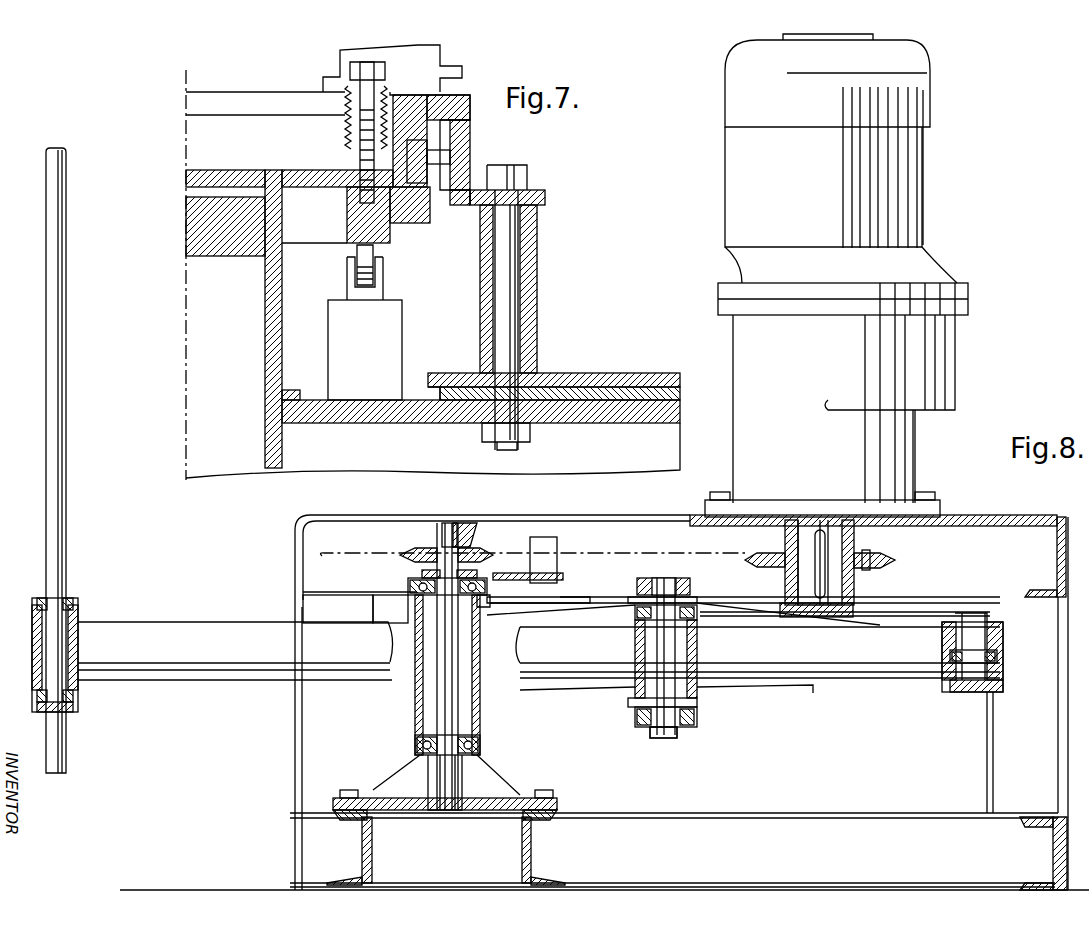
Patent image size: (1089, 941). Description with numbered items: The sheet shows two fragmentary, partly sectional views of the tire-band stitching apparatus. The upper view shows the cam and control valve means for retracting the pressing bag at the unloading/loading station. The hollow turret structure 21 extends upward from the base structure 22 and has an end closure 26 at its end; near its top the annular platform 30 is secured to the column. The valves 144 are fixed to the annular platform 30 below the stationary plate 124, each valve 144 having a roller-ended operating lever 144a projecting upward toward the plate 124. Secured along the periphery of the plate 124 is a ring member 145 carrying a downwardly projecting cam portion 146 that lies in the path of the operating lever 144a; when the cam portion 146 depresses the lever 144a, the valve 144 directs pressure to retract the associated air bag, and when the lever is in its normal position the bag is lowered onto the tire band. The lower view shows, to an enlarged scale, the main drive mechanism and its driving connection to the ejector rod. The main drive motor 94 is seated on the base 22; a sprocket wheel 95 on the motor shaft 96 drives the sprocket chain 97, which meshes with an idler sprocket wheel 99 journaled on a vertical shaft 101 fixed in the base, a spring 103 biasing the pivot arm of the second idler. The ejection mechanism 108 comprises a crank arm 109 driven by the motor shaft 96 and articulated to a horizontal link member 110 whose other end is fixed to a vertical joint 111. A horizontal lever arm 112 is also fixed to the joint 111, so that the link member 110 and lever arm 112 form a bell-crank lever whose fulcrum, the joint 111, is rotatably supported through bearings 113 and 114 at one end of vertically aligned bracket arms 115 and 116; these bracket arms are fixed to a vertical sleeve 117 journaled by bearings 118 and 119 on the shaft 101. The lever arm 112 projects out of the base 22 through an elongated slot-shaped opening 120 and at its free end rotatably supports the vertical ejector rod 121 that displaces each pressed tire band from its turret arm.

In FIG. 7, the vertical column or turret structure 21 is at (282, 362).
In FIG. 8, the base structure 22 is at (358, 520).
In FIG. 7, the end closure 26 is at (218, 257).
In FIG. 7, the annular platform 30 is at (305, 422).
In FIG. 8, the main drive motor 94 is at (915, 185).
In FIG. 8, the sprocket wheel 95 is at (888, 566).
In FIG. 8, the motor shaft 96 is at (805, 540).
In FIG. 8, the sprocket chain 97 is at (640, 555).
In FIG. 8, the idler sprocket wheel 99 is at (492, 550).
In FIG. 8, the vertical shaft 101 is at (436, 617).
In FIG. 8, the spring 103 is at (463, 530).
In FIG. 8, the ejection mechanism 108 is at (232, 600).
In FIG. 8, the crank arm 109 is at (918, 600).
In FIG. 8, the horizontal link member 110 is at (857, 670).
In FIG. 8, the vertical joint 111 is at (698, 653).
In FIG. 8, the horizontal lever arm 112 is at (136, 633).
In FIG. 8, the bearing 113 is at (693, 592).
In FIG. 8, the bearing 114 is at (650, 724).
In FIG. 8, the bracket arm 115 is at (503, 603).
In FIG. 8, the bracket arm 116 is at (511, 718).
In FIG. 8, the vertical sleeve 117 is at (410, 690).
In FIG. 8, the bearing 118 is at (412, 586).
In FIG. 8, the bearing 119 is at (415, 748).
In FIG. 8, the slot-shaped opening 120 is at (297, 692).
In FIG. 8, the vertical ejector rod 121 is at (64, 496).
In FIG. 7, the stationary plate 124 is at (232, 170).
In FIG. 7, the valve 144 is at (402, 330).
In FIG. 7, the roller-ended operating lever 144a is at (380, 258).
In FIG. 7, the ring member 145 is at (425, 222).
In FIG. 7, the cam portion 146 is at (313, 243).